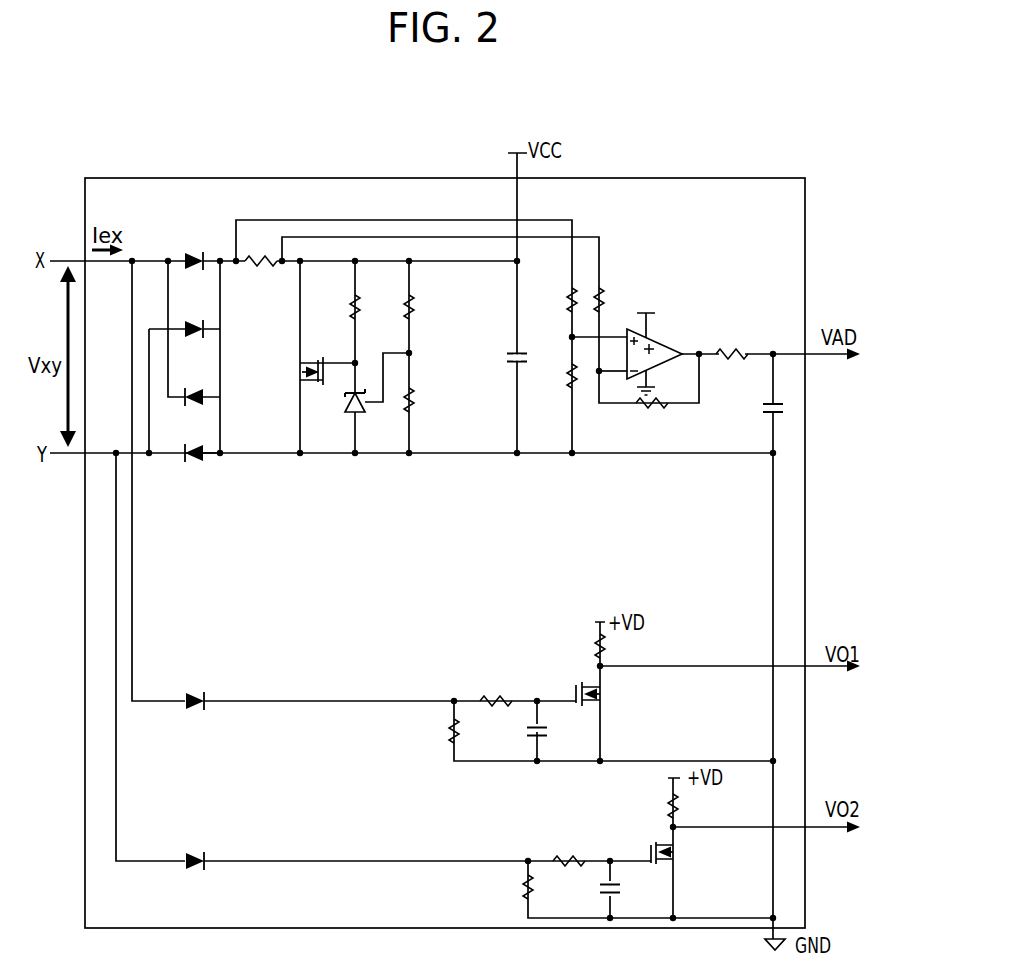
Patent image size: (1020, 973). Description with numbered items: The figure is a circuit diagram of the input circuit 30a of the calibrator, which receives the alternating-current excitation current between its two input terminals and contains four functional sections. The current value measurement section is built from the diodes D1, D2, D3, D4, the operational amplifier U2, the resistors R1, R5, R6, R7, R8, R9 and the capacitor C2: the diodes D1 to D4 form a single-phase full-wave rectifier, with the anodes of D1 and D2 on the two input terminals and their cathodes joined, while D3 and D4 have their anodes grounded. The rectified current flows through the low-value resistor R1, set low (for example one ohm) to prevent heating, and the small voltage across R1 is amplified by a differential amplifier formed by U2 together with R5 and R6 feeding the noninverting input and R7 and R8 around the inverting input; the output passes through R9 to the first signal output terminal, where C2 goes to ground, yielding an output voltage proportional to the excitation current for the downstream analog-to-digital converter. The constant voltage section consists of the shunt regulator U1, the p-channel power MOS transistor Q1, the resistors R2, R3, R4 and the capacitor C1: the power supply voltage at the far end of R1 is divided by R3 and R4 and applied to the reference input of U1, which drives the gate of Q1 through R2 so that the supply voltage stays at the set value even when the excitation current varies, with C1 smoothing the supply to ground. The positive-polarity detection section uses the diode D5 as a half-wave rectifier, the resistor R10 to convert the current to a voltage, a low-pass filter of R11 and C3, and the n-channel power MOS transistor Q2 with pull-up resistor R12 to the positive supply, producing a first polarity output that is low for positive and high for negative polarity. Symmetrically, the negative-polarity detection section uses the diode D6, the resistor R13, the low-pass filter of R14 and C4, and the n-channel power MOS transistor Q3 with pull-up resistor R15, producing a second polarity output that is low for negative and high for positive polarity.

The input circuit 30a is at (305, 177).
The diode D1 is at (195, 250).
The diode D2 is at (195, 317).
The diode D3 is at (195, 385).
The diode D4 is at (195, 442).
The diode D5 is at (195, 691).
The diode D6 is at (195, 851).
The resistor R1 is at (261, 249).
The resistor R2 is at (341, 308).
The resistor R3 is at (395, 308).
The resistor R4 is at (423, 401).
The resistor R5 is at (556, 301).
The resistor R6 is at (559, 377).
The resistor R7 is at (611, 292).
The resistor R8 is at (652, 418).
The resistor R9 is at (732, 342).
The resistor R10 is at (433, 732).
The resistor R11 is at (496, 689).
The resistor R12 is at (579, 649).
The resistor R13 is at (509, 891).
The resistor R14 is at (570, 849).
The resistor R15 is at (655, 808).
The capacitor C1 is at (510, 346).
The capacitor C2 is at (760, 414).
The capacitor C3 is at (551, 734).
The capacitor C4 is at (626, 890).
The p-channel power MOS transistor Q1 is at (312, 357).
The n-channel power MOS transistor Q2 is at (603, 696).
The n-channel power MOS transistor Q3 is at (679, 855).
The shunt regulator U1 is at (363, 389).
The operational amplifier U2 is at (657, 343).